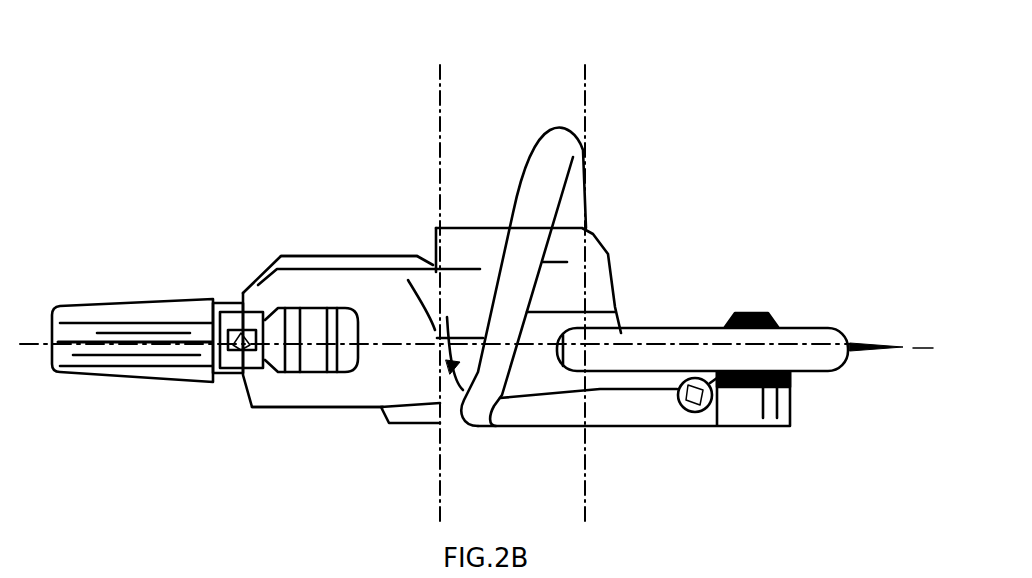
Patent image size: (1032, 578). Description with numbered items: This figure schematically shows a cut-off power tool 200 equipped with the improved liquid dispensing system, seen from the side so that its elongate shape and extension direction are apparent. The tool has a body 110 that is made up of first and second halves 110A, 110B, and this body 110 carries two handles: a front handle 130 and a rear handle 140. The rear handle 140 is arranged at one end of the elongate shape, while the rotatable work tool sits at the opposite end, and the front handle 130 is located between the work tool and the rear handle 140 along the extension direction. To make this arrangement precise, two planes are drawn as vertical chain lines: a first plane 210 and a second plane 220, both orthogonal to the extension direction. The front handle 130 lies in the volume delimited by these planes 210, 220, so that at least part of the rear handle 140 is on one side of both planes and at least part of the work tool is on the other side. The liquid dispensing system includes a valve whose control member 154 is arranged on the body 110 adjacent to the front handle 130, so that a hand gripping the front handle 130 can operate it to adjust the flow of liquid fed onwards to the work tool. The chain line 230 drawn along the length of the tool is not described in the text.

The cut-off power tool 200 is at (212, 93).
The first plane 210 is at (438, 112).
The second plane 220 is at (590, 107).
The longitudinal axis 230 is at (38, 344).
The rear handle 140 is at (173, 300).
The body 110 is at (318, 285).
The first half of the body 110A is at (400, 287).
The second half of the body 110B is at (338, 384).
The front handle 130 is at (560, 128).
The control member 154 is at (397, 437).